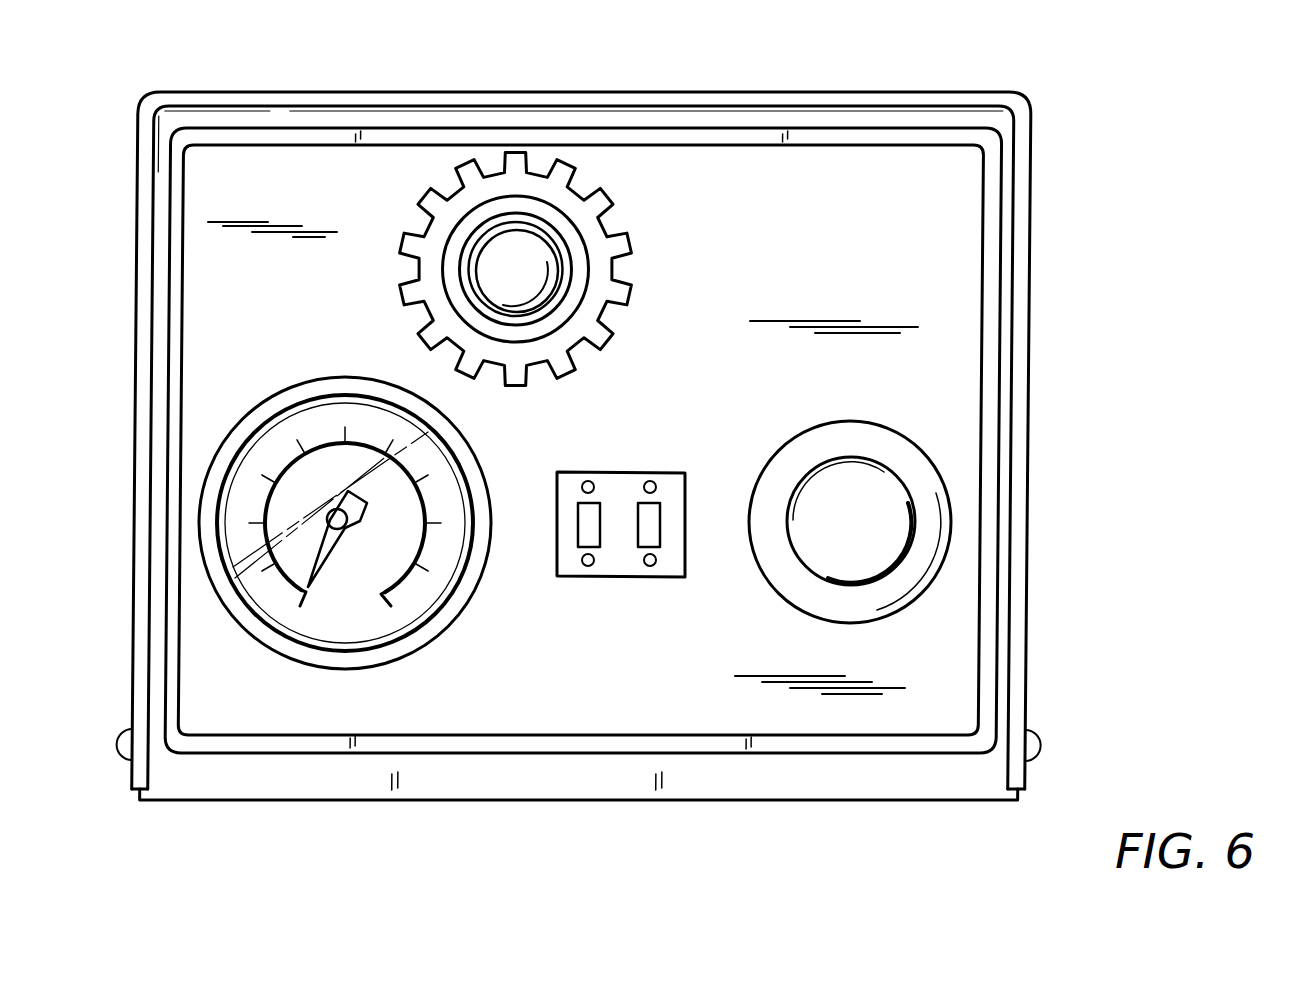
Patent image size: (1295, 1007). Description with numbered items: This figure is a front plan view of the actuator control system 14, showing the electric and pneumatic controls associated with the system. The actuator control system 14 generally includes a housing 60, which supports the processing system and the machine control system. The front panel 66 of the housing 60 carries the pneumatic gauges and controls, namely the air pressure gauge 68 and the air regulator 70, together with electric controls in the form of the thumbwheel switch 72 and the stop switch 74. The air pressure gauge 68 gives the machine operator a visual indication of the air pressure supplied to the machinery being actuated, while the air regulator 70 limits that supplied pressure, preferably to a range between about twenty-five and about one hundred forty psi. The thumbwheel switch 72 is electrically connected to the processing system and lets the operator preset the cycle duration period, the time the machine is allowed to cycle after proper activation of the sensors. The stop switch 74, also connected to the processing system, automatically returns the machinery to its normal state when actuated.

The actuator control system 14 is at (1087, 147).
The housing 60 is at (1030, 279).
The front panel 66 is at (946, 633).
The air pressure gauge 68 is at (205, 536).
The air regulator 70 is at (495, 190).
The thumbwheel switch 72 is at (667, 563).
The stop switch 74 is at (922, 476).